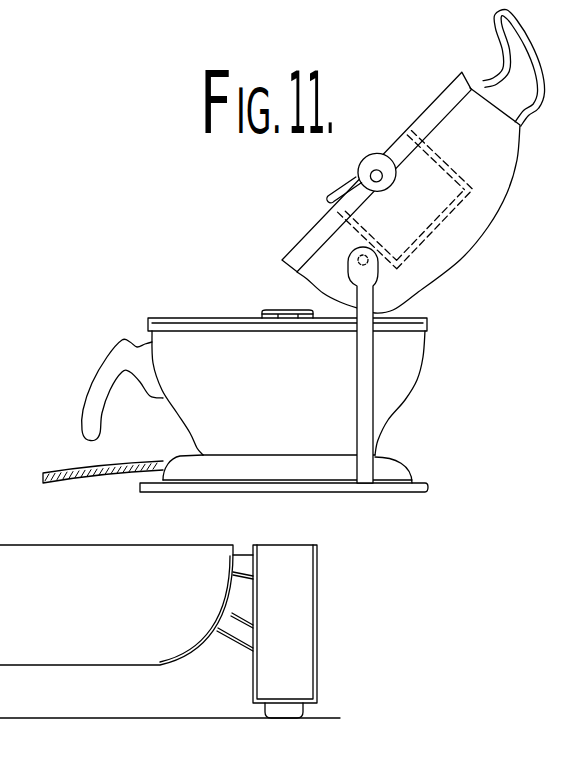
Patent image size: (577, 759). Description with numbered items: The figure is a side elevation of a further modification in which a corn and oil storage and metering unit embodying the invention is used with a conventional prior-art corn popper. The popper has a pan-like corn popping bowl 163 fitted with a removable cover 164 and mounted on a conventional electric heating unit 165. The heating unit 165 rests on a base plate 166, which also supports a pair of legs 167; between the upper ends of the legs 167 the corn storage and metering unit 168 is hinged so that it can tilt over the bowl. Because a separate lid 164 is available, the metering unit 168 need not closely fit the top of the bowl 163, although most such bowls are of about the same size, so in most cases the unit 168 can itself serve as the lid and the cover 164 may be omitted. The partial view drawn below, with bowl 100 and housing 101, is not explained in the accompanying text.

The mixing bowl 163 is at (415, 388).
The lid 164 is at (430, 323).
The base 165 is at (395, 468).
The base plate 166 is at (430, 487).
The support arm 167 is at (365, 420).
The tiltable upper bowl with handle 168 is at (487, 232).
The bowl 100 is at (157, 655).
The motor housing 101 is at (302, 612).